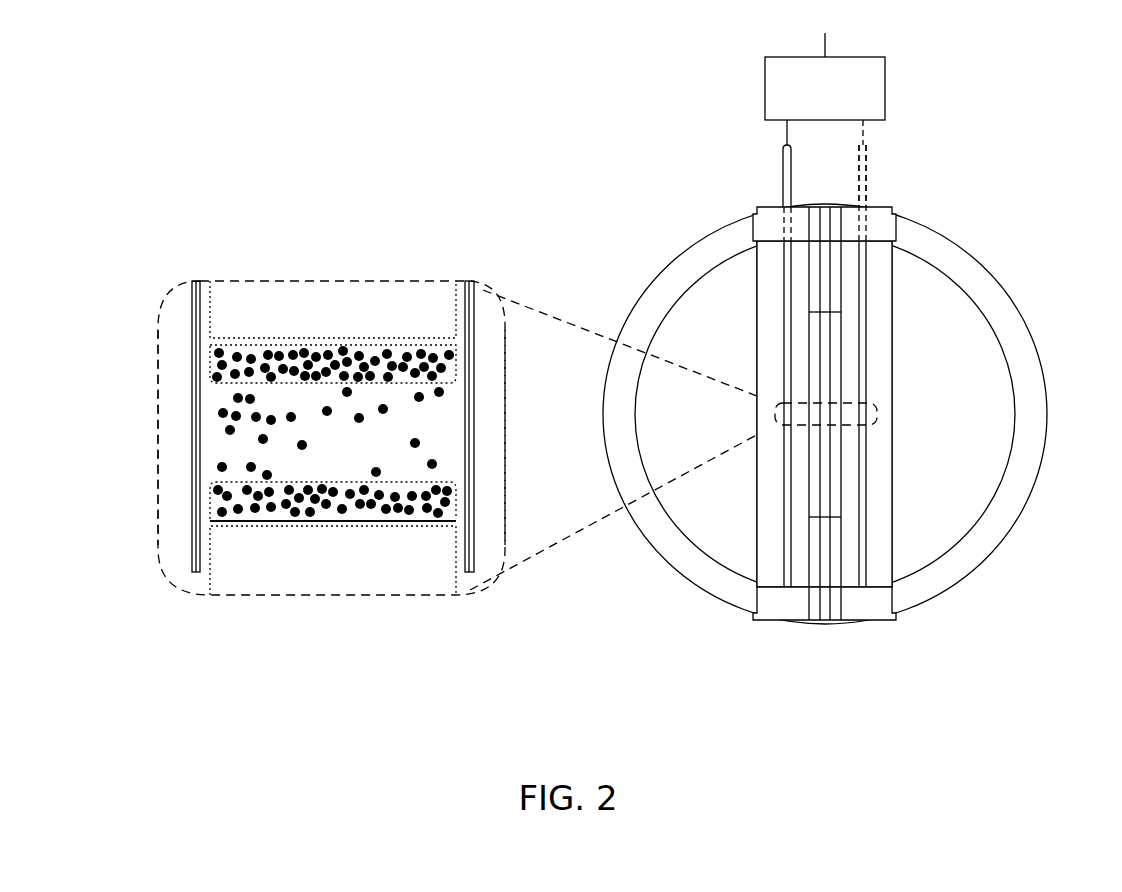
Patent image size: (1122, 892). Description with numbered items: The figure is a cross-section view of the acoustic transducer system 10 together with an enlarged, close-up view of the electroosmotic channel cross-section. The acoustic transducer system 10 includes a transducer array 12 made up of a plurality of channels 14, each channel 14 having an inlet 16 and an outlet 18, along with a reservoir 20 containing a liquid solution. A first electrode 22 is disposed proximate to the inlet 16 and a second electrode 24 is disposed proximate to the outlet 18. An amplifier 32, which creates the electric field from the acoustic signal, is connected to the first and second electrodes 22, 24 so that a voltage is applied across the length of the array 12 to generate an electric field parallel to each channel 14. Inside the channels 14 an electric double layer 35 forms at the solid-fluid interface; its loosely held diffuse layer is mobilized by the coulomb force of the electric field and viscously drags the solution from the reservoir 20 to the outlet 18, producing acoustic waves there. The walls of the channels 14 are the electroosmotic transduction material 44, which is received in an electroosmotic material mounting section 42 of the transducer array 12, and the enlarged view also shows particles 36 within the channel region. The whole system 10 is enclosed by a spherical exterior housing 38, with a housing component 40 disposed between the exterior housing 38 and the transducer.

The acoustic transducer system 10 is at (646, 133).
The transducer array 12 is at (158, 274).
The channel 14 is at (434, 419).
The inlet 16 is at (220, 465).
The outlet 18 is at (432, 461).
The reservoir 20 is at (178, 335).
The first electrode 22 is at (200, 290).
The second electrode 24 is at (478, 290).
The amplifier 32 is at (885, 90).
The electric double layer 35 is at (380, 340).
The particles 36 is at (248, 443).
The exterior housing 38 is at (1047, 420).
The housing component 40 is at (776, 621).
The electroosmotic material mounting section 42 is at (820, 621).
The electroosmotic transduction material 44 is at (323, 288).